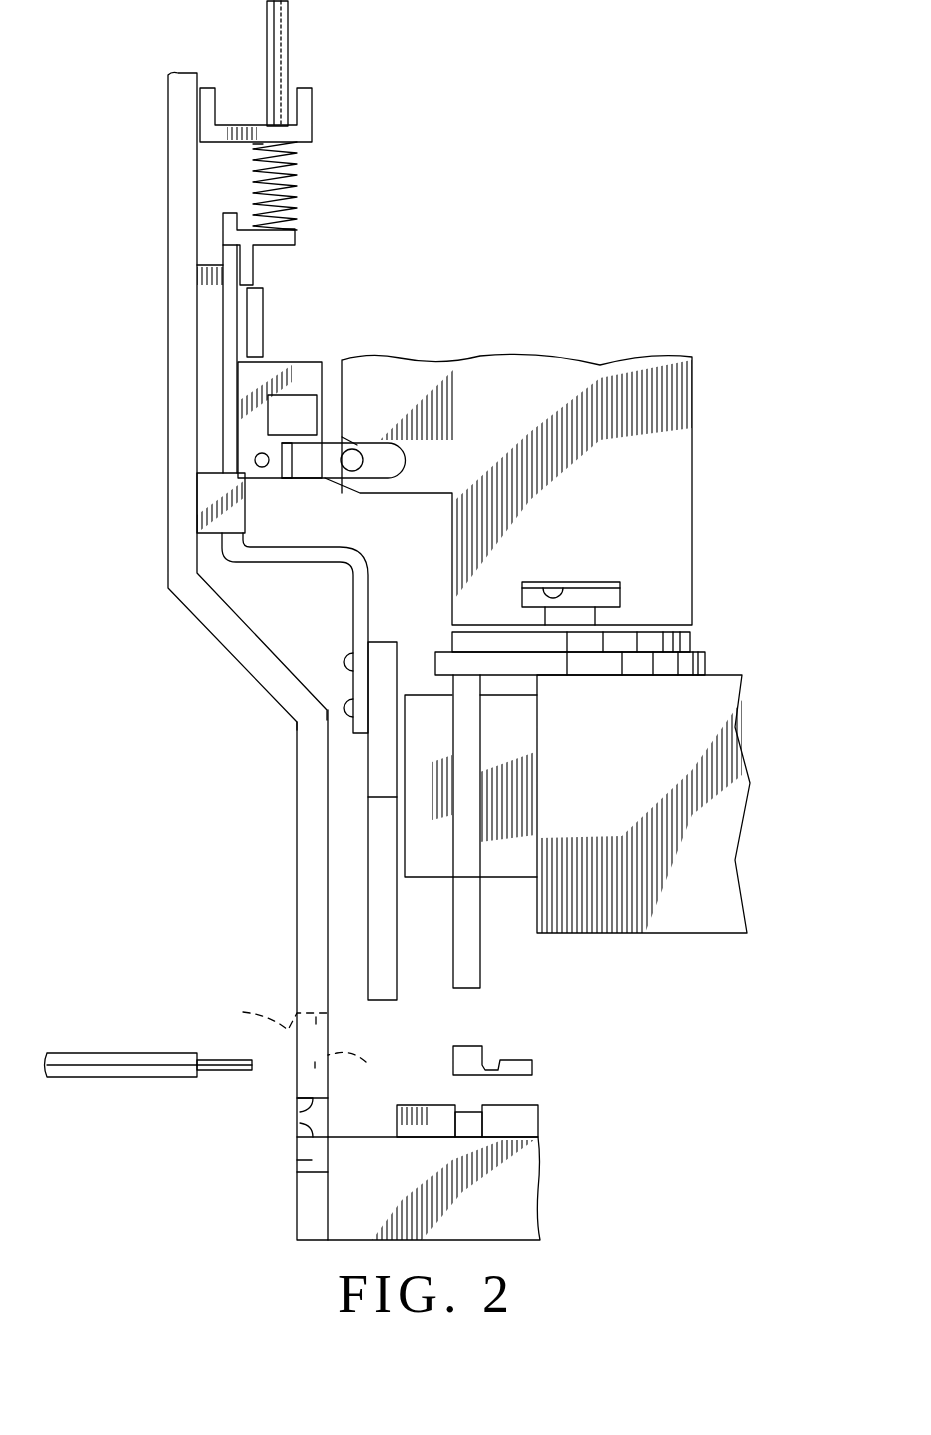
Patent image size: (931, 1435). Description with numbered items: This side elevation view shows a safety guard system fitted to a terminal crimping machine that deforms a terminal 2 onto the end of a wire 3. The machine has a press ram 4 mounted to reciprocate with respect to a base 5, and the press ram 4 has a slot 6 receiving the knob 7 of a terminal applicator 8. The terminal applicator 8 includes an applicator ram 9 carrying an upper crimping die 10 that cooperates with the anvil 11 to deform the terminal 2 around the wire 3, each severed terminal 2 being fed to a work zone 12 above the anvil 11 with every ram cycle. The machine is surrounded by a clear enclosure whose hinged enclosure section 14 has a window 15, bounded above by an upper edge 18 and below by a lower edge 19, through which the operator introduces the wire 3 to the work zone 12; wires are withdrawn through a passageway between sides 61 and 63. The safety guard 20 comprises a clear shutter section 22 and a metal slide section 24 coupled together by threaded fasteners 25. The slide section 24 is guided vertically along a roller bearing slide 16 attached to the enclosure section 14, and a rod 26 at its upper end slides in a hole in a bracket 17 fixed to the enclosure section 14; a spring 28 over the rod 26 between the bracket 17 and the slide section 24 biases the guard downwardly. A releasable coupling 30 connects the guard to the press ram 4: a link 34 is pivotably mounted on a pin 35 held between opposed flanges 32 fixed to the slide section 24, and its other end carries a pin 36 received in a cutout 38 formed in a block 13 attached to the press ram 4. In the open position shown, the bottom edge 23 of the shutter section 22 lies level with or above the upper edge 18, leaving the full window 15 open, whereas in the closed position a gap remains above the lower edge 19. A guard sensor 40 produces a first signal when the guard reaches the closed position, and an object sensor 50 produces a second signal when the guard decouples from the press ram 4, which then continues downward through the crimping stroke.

The terminal 2 is at (513, 1060).
The wire 3 is at (218, 1060).
The press ram 4 is at (660, 445).
The base 5 is at (505, 1185).
The slot 6 is at (548, 585).
The knob 7 is at (593, 593).
The terminal applicator 8 is at (732, 671).
The applicator ram 9 is at (687, 815).
The upper crimping die 10 is at (467, 988).
The anvil 11 is at (472, 1112).
The work zone 12 is at (350, 1008).
The block 13 is at (405, 497).
The enclosure section 14 is at (297, 840).
The window 15 is at (357, 1061).
The roller bearing slide 16 is at (210, 323).
The bracket 17 is at (313, 108).
The upper edge 18 is at (270, 1016).
The lower edge 19 is at (307, 1123).
The safety guard 20 is at (347, 624).
The shutter section 22 is at (366, 915).
The bottom edge 23 is at (387, 1000).
The slide section 24 is at (232, 362).
The threaded fasteners 25 is at (348, 700).
The rod 26 is at (273, 35).
The spring 28 is at (290, 187).
The releasable coupling 30 is at (322, 505).
The opposed flanges 32 is at (298, 362).
The link 34 is at (308, 470).
The pin 35 is at (255, 457).
The pin 36 is at (350, 467).
The cutout 38 is at (405, 458).
The guard sensor 40 is at (280, 280).
The object sensor 50 is at (350, 408).
The side 61 is at (300, 1108).
The side 63 is at (307, 1160).